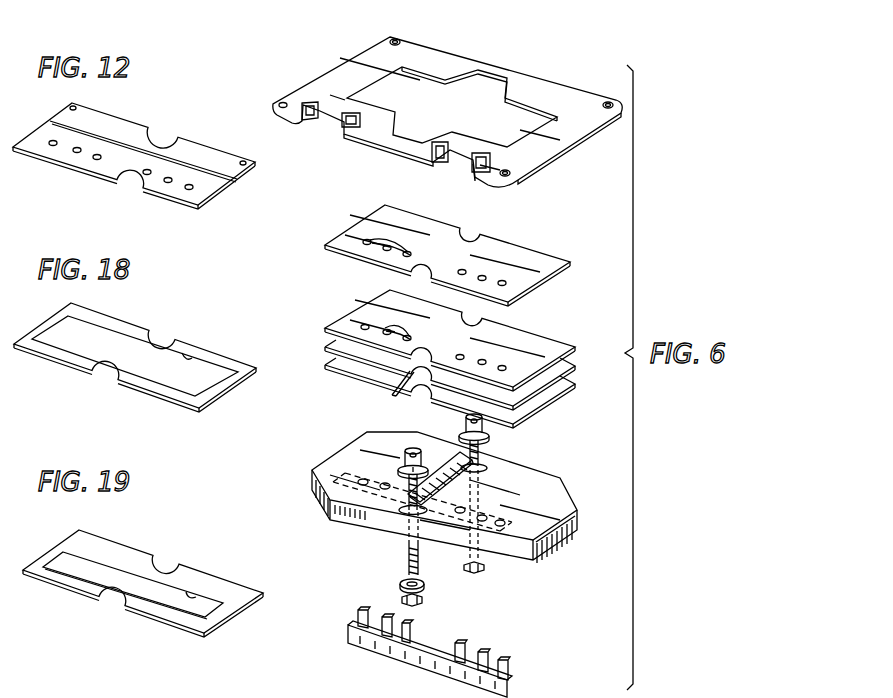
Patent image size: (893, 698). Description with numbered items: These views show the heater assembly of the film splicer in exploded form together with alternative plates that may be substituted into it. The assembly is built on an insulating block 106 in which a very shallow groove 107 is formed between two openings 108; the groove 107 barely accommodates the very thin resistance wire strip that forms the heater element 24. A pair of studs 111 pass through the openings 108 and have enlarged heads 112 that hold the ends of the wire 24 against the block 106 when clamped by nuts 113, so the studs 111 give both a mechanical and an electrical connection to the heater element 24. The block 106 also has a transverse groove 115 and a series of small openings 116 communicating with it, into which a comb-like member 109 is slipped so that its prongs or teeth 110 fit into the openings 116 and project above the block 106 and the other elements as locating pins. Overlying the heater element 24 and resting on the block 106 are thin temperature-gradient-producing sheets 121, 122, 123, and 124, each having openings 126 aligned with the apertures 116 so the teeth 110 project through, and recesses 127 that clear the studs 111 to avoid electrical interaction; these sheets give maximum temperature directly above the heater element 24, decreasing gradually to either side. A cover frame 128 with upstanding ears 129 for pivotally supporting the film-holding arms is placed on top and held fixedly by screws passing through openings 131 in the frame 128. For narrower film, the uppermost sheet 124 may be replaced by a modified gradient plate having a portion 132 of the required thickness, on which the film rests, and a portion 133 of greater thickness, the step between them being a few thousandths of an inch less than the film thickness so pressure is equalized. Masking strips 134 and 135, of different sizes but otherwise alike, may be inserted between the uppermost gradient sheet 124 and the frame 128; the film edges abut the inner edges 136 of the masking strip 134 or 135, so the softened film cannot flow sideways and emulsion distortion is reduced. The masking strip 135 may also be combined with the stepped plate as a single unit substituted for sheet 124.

In FIG. 6, the heater element 24 is at (445, 460).
In FIG. 6, the insulating block 106 is at (561, 474).
In FIG. 6, the shallow groove 107 is at (470, 494).
In FIG. 6, the openings 108 is at (488, 466).
In FIG. 6, the comb-like member 109 is at (512, 684).
In FIG. 6, the prongs or teeth 110 is at (404, 622).
In FIG. 6, the studs 111 is at (408, 550).
In FIG. 6, the enlarged heads 112 is at (398, 468).
In FIG. 6, the nuts 113 is at (430, 598).
In FIG. 6, the transverse groove 115 is at (548, 548).
In FIG. 6, the small openings 116 is at (384, 489).
In FIG. 6, the temperature-gradient-producing sheet 121 is at (562, 388).
In FIG. 6, the temperature-gradient-producing sheet 122 is at (562, 366).
In FIG. 6, the temperature-gradient-producing sheet 123 is at (560, 347).
In FIG. 6, the uppermost gradient sheet 124 is at (540, 280).
In FIG. 6, the openings 126 is at (504, 281).
In FIG. 6, the recesses 127 is at (480, 236).
In FIG. 6, the cover frame 128 is at (515, 75).
In FIG. 6, the upstanding ears 129 is at (344, 113).
In FIG. 6, the openings 131 is at (400, 40).
In FIG. 12, the portion of required thickness 132 is at (212, 185).
In FIG. 12, the portion of greater thickness 133 is at (240, 174).
In FIG. 18, the masking strip 134 is at (120, 328).
In FIG. 19, the masking strip 135 is at (120, 550).
In FIG. 18, the inner edges 136 is at (188, 357).
In FIG. 19, the inner edges 136 is at (192, 594).